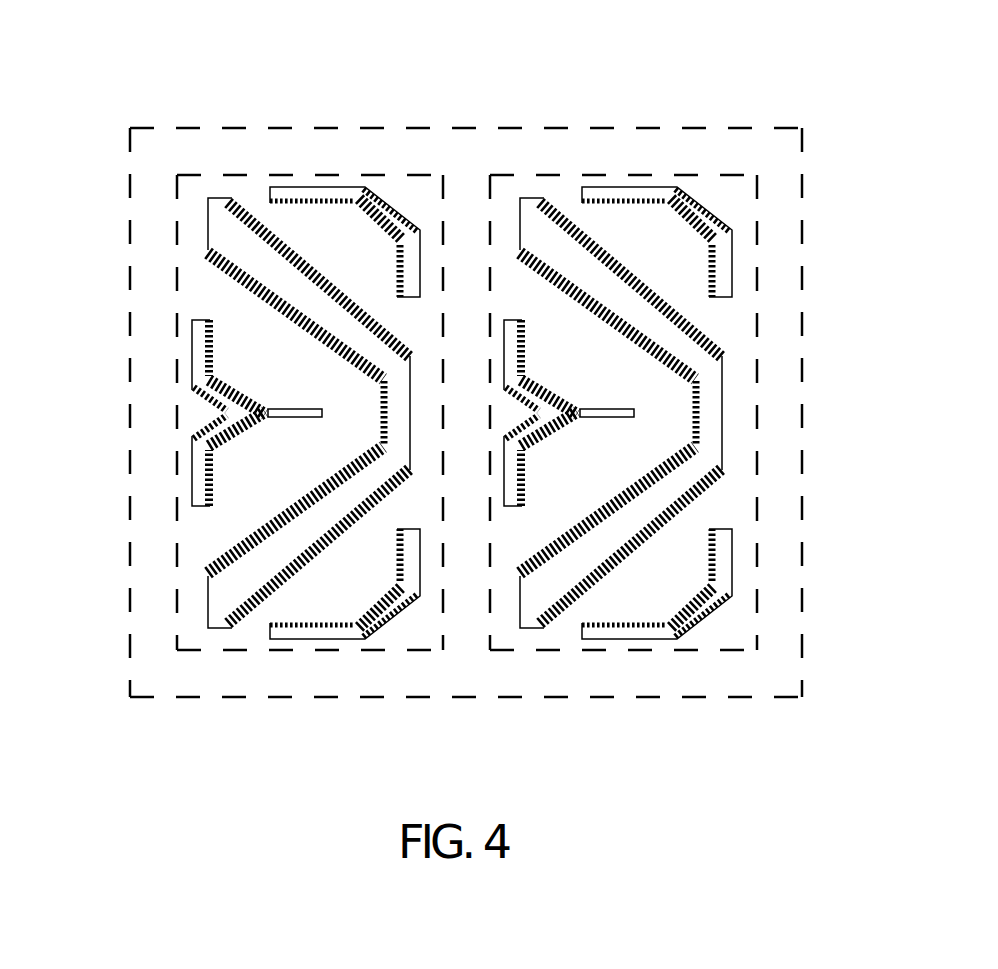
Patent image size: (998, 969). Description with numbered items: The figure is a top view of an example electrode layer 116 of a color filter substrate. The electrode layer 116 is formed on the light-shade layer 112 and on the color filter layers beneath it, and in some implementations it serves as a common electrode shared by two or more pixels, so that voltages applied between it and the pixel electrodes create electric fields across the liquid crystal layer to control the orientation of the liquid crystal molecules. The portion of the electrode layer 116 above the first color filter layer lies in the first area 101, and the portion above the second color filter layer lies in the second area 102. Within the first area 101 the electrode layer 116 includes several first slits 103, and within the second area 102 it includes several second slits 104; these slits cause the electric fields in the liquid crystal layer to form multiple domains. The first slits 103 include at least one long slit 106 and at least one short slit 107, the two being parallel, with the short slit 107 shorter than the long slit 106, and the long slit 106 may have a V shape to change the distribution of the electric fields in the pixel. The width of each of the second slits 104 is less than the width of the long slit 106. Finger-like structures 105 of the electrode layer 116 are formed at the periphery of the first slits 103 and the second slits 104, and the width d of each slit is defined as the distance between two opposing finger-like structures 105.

The first area 101 is at (213, 168).
The second area 102 is at (532, 175).
The first slits 103 is at (393, 57).
The second slits 104 is at (606, 285).
The finger-like structures 105 is at (218, 273).
The long slit 106 is at (255, 267).
The short slit 107 is at (373, 188).
The light-shade layer 112 is at (467, 153).
The electrode layer 116 is at (857, 110).
The width d is at (297, 284).